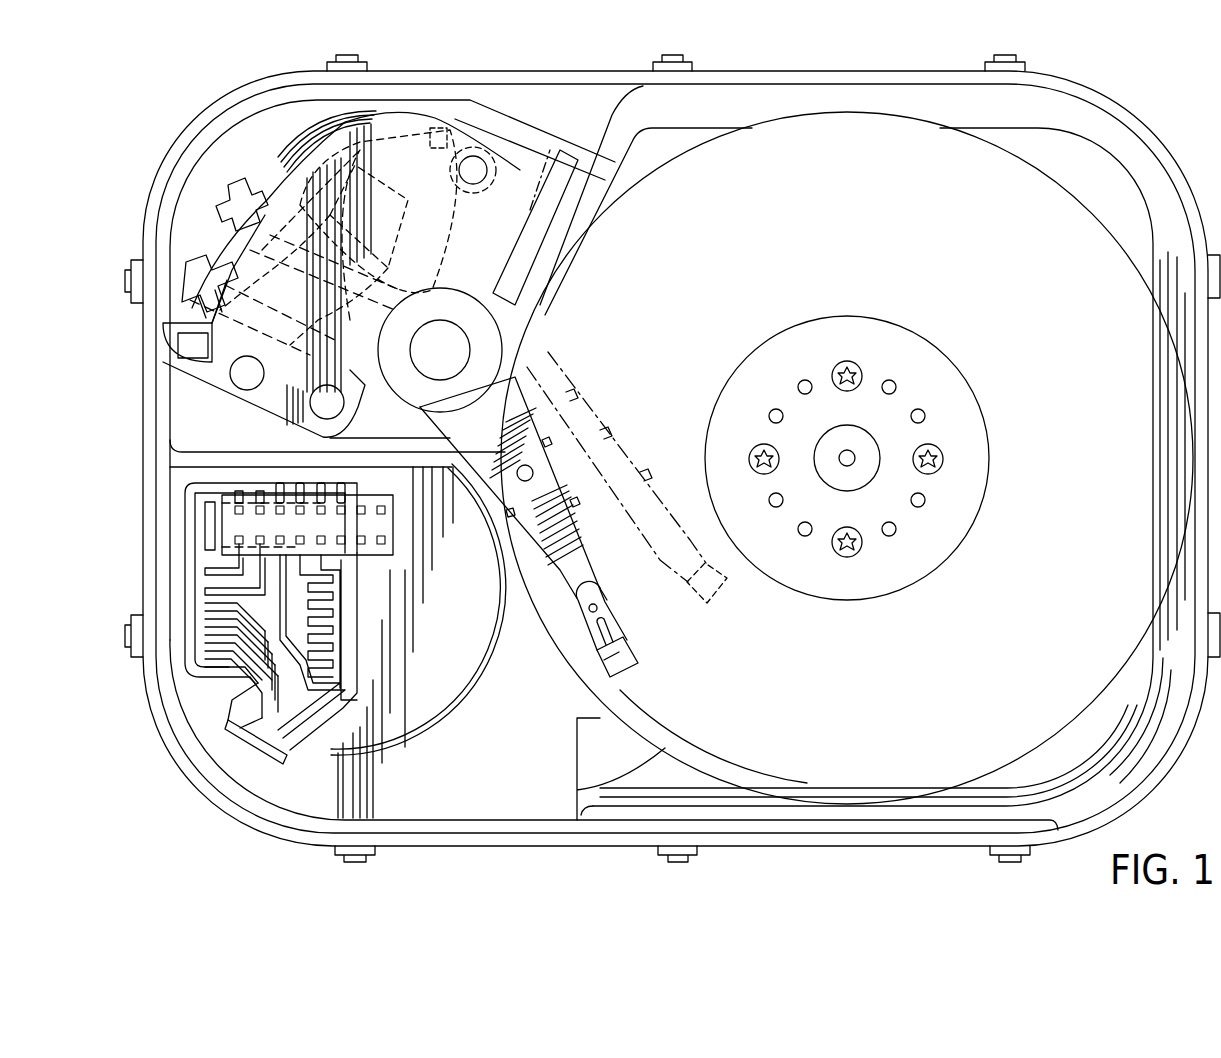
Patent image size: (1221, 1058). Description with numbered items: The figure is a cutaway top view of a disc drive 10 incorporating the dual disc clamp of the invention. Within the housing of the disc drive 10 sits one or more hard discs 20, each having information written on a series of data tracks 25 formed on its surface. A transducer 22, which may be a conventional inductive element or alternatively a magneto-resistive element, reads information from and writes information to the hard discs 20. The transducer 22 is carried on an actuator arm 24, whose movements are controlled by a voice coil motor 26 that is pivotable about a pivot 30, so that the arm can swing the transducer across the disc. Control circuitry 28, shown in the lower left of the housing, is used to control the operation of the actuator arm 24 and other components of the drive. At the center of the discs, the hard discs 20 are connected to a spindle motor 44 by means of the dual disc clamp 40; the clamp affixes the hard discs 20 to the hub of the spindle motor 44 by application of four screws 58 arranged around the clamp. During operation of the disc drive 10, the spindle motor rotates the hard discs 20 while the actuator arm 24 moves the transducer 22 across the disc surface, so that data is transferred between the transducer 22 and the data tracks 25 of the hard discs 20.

The disc drive 10 is at (893, 52).
The hard disc 20 is at (864, 148).
The transducer 22 is at (602, 669).
The actuator arm 24 is at (492, 406).
The data tracks 25 is at (795, 787).
The voice coil motor 26 is at (322, 148).
The control circuitry 28 is at (186, 569).
The pivot 30 is at (455, 342).
The dual disc clamp 40 is at (887, 365).
The spindle motor 44 is at (852, 454).
The screws 58 is at (940, 458).